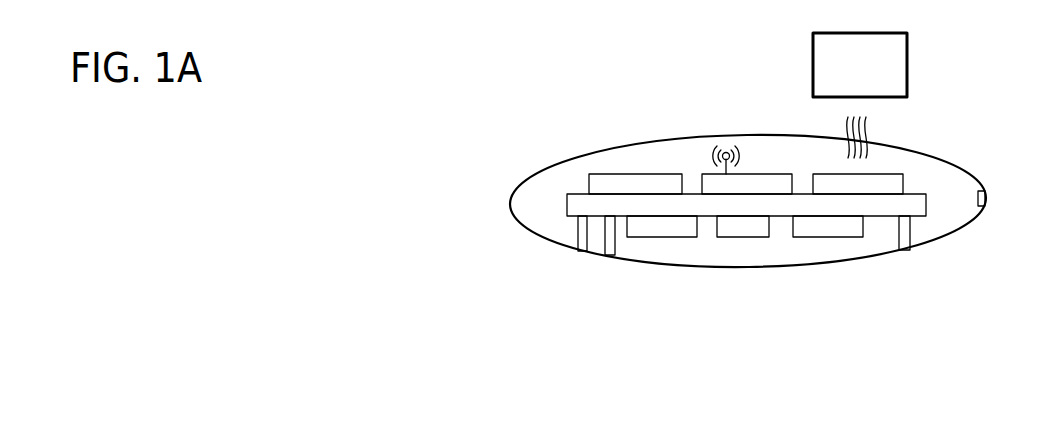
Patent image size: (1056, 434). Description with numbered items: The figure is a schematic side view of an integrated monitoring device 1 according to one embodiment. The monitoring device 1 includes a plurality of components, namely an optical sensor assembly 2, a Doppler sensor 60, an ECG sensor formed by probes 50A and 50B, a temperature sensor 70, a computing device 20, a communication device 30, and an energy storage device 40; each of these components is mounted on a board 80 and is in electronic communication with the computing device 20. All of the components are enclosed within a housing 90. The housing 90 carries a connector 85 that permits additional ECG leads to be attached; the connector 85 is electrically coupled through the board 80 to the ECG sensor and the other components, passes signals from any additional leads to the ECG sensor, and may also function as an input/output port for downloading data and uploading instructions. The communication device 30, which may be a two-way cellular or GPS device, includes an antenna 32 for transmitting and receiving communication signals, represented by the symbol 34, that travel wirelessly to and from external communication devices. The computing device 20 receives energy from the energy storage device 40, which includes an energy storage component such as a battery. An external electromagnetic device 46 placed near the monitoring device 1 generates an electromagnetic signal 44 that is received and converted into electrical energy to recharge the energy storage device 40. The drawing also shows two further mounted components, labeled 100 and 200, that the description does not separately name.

The monitoring device 1 is at (522, 158).
The optical sensor assembly 2 is at (755, 290).
The computing device 20 is at (607, 182).
The communication device 30 is at (709, 123).
The antenna 32 is at (723, 159).
The communication signals 34 is at (710, 148).
The energy storage device 40 is at (828, 173).
The electromagnetic signal 44 is at (868, 126).
The external electromagnetic device 46 is at (907, 65).
The ECG sensor probe 50A is at (920, 250).
The ECG sensor probe 50B is at (603, 257).
The Doppler sensor 60 is at (742, 231).
The temperature sensor 70 is at (575, 243).
The board 80 is at (910, 200).
The connector 85 is at (986, 198).
The housing 90 is at (955, 235).
The processing unit 100 is at (842, 233).
The power supply unit 200 is at (637, 233).